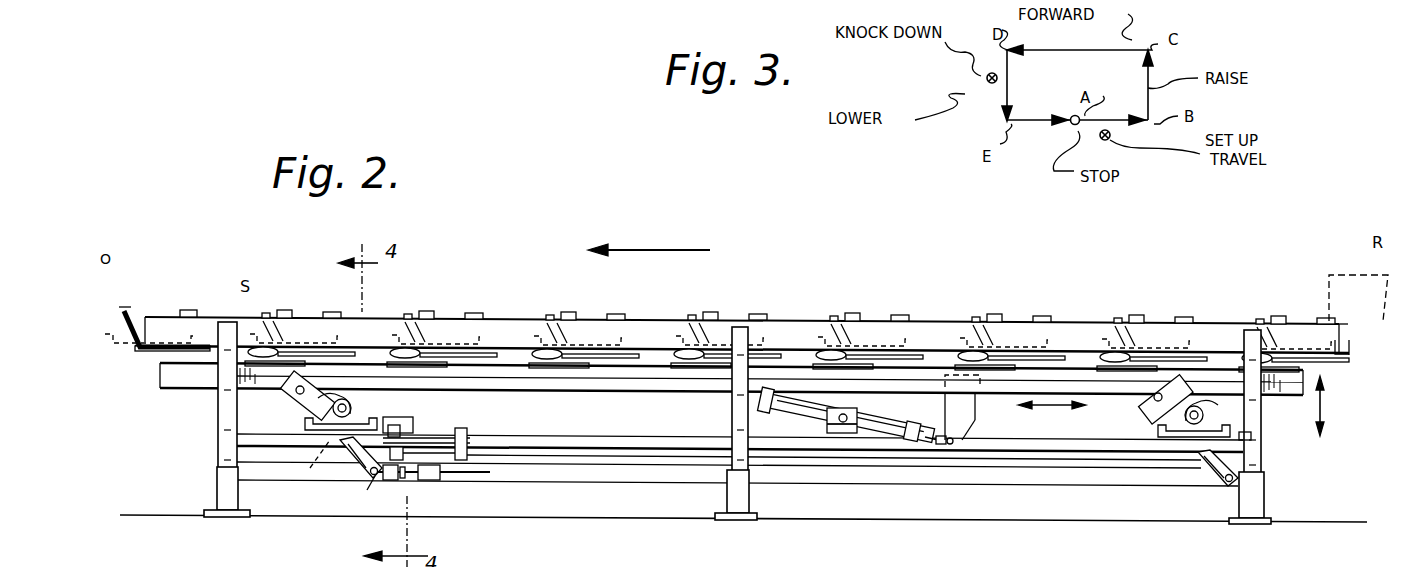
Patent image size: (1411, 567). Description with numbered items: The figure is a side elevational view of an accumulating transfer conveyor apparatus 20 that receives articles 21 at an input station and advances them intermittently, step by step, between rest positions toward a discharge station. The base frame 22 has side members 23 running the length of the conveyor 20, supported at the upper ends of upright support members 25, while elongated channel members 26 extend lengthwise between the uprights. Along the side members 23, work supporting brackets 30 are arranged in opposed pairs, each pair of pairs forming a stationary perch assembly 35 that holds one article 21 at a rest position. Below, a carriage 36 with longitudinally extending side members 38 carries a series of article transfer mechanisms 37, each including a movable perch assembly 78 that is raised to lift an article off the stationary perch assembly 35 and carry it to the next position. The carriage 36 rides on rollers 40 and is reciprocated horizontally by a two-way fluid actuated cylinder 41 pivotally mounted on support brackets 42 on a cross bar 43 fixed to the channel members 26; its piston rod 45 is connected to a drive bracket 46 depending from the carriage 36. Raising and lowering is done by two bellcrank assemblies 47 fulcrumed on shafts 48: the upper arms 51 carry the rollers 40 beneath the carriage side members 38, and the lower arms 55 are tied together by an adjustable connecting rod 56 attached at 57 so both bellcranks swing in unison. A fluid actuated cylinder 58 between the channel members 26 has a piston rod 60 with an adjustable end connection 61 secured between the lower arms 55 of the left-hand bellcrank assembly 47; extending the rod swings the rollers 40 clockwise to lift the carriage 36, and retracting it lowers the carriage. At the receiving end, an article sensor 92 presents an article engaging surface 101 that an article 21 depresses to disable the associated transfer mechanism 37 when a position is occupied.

The accumulating transfer conveyor apparatus 20 is at (958, 262).
The article 21 is at (1342, 266).
The base frame 22 is at (200, 488).
The side member 23 is at (517, 320).
The upright support member 25 is at (218, 456).
The channel member 26 is at (522, 446).
The work supporting bracket 30 is at (696, 308).
The stationary perch assembly 35 is at (210, 295).
The carriage 36 is at (530, 398).
The article transfer mechanism 37 is at (135, 364).
The carriage side member 38 is at (159, 384).
The roller 40 is at (288, 388).
The two-way fluid actuated cylinder 41 is at (792, 404).
The support bracket 42 is at (850, 390).
The cross bar 43 is at (840, 436).
The piston rod 45 is at (939, 435).
The drive bracket 46 is at (964, 418).
The bellcrank assembly 47 is at (328, 482).
The shaft 48 is at (353, 400).
The upper arm 51 is at (288, 440).
The lower arm 55 is at (366, 448).
The adjustable connecting rod 56 is at (590, 476).
The connection 57 is at (369, 490).
The fluid actuated cylinder 58 is at (436, 472).
The piston rod 60 is at (395, 422).
The adjustable end connection 61 is at (309, 460).
The movable perch assembly 78 is at (160, 326).
The article sensor 92 is at (110, 316).
The article engaging surface 101 is at (688, 324).